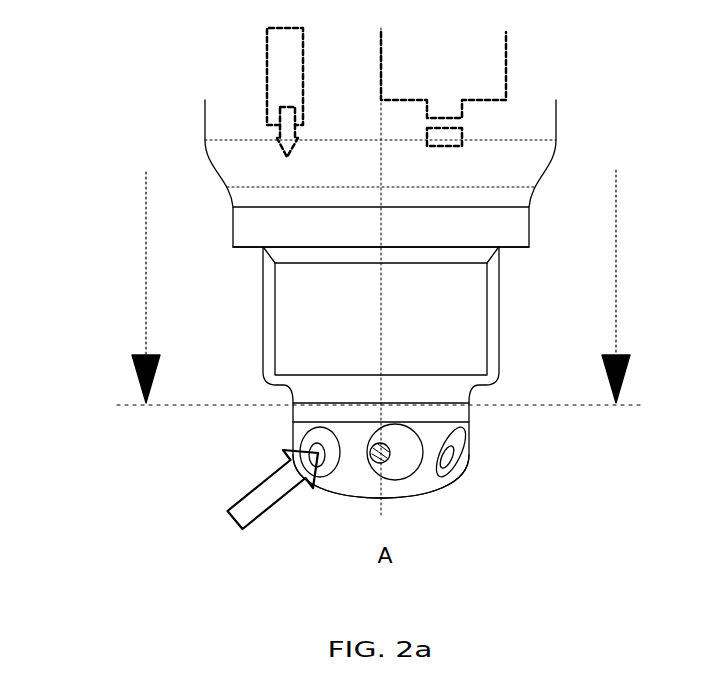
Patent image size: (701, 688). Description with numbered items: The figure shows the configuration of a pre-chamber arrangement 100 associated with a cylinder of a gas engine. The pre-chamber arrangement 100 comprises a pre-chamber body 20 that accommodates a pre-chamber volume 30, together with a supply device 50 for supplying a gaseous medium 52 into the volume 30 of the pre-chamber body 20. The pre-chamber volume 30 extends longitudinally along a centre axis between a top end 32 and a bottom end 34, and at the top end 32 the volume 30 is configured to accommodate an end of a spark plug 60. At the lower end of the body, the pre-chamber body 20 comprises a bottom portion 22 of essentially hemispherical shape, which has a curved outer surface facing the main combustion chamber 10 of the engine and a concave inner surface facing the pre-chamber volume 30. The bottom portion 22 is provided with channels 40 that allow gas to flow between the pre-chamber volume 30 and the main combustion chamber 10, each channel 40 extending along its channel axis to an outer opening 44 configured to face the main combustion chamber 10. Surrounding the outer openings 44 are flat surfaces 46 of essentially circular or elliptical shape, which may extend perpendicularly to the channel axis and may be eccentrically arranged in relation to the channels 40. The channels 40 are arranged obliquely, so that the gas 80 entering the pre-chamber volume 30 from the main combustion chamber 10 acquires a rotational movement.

The pre-chamber arrangement 100 is at (134, 54).
The main combustion chamber 10 is at (571, 494).
The pre-chamber body 20 is at (530, 215).
The pre-chamber volume 30 is at (314, 235).
The top end 32 is at (530, 108).
The bottom end 34 is at (446, 416).
The bottom portion 22 is at (433, 485).
The channels 40 is at (393, 459).
The outer opening 44 is at (450, 457).
The flat surfaces 46 is at (330, 462).
The supply device 50 is at (266, 40).
The gaseous medium 52 is at (300, 136).
The spark plug 60 is at (462, 137).
The gas 80 is at (257, 490).